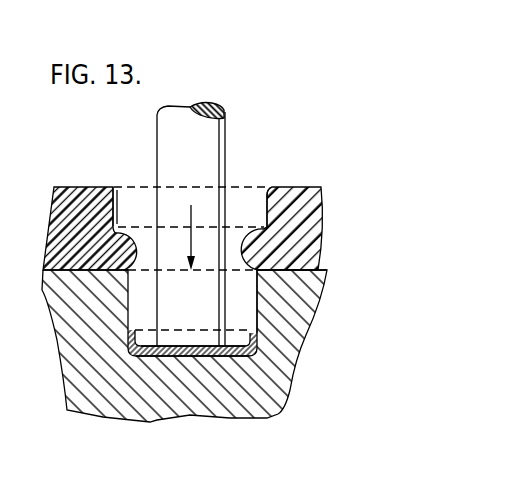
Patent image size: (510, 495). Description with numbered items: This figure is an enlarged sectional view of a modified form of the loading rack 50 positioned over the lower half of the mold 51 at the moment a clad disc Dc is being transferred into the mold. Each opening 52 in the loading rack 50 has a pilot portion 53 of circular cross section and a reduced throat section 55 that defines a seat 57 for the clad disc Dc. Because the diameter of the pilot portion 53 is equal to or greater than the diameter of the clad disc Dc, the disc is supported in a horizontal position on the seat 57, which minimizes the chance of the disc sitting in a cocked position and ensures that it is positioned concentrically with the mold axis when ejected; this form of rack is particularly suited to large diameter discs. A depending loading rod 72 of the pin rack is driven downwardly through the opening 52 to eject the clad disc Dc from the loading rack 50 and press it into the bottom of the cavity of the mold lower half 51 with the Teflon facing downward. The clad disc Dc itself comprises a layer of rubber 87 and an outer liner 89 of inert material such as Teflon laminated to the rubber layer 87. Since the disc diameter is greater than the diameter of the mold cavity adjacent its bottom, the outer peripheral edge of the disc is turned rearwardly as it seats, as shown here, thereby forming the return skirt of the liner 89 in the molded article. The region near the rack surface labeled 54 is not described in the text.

The loading rack 50 is at (72, 238).
The lip of upper left block 54 is at (118, 215).
The opening 52 is at (118, 216).
The reduced throat section 55 is at (248, 245).
The seat 57 is at (267, 224).
The mold lower half 51 is at (72, 388).
The pilot portion 53 is at (258, 294).
The layer of rubber 87 is at (128, 340).
The outer liner 89 is at (180, 358).
The clad disc Dc is at (262, 345).
The loading rod 72 is at (218, 125).